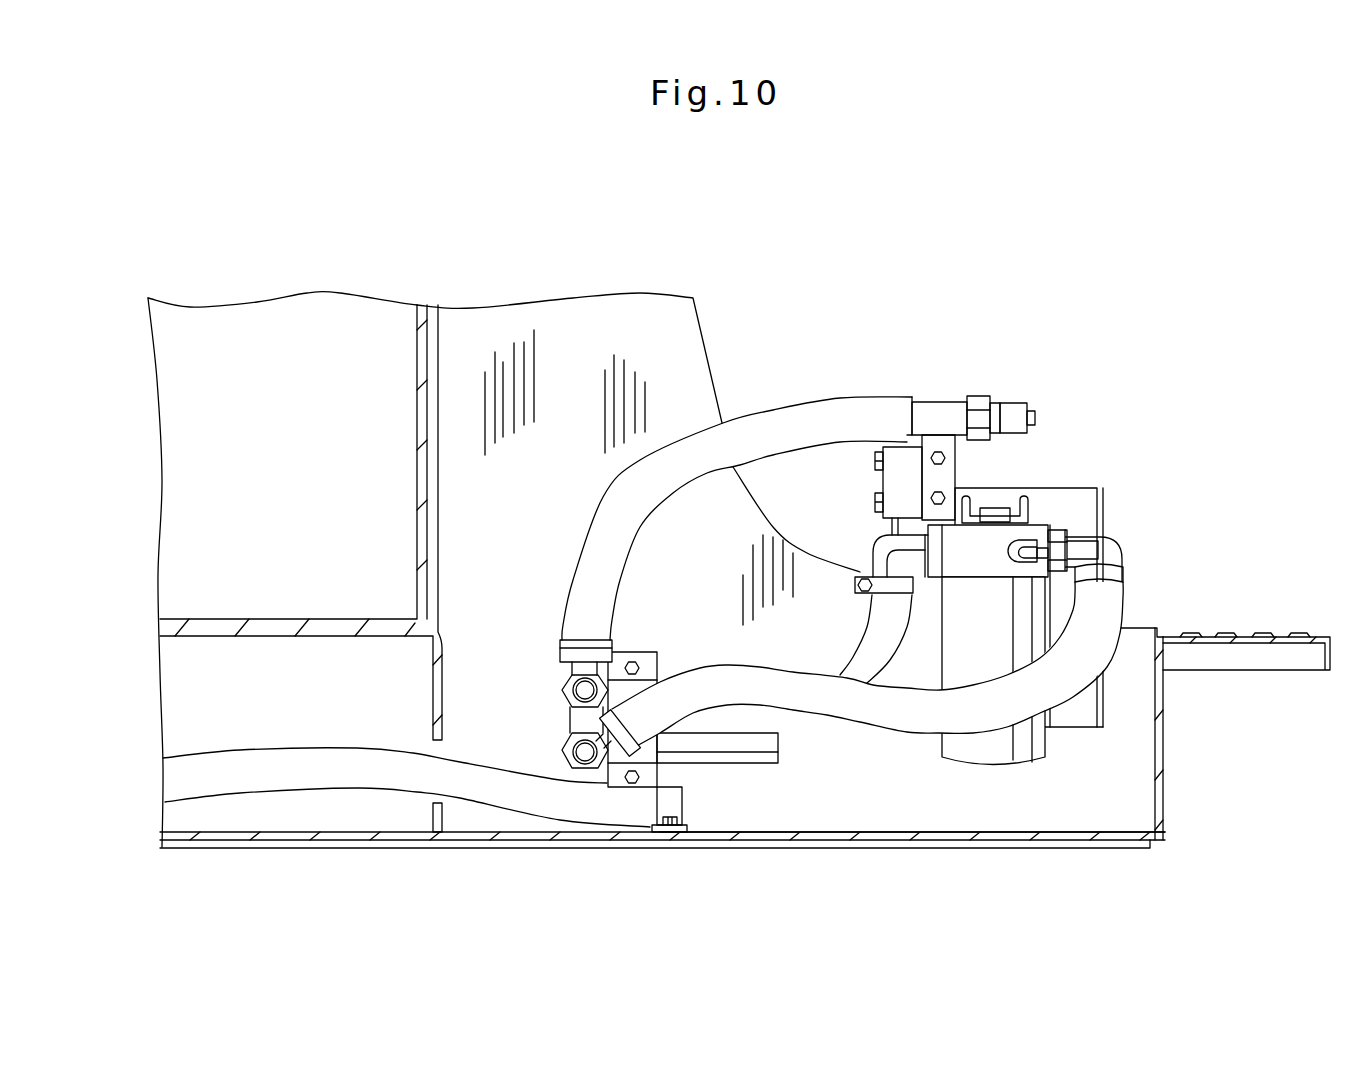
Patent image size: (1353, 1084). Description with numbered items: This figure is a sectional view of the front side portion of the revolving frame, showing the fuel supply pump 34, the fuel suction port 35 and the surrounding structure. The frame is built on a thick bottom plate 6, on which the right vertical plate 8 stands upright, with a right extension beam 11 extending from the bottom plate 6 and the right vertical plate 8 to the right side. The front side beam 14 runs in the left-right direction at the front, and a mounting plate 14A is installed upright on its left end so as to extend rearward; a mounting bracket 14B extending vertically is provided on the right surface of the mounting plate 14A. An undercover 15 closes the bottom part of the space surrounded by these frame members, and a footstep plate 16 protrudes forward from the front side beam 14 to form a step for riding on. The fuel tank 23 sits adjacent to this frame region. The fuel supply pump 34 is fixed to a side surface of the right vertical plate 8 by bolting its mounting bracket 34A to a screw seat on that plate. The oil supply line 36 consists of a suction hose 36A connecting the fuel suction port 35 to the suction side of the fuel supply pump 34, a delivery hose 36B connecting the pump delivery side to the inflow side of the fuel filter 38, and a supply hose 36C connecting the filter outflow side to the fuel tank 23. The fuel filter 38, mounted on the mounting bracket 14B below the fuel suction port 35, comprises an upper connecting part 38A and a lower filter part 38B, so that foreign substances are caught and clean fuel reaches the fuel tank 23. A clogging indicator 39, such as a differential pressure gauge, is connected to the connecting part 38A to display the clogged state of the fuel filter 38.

The bottom plate 6 is at (715, 845).
The right vertical plate 8 is at (568, 333).
The right extension beam 11 is at (203, 633).
The front side beam 14 is at (1160, 800).
The mounting plate 14A is at (1135, 643).
The mounting bracket 14B is at (1062, 507).
The undercover 15 is at (1028, 835).
The footstep plate 16 is at (1235, 660).
The fuel tank 23 is at (287, 347).
The fuel supply pump 34 is at (752, 727).
The mounting bracket 34A is at (648, 653).
The fuel suction port 35 is at (1018, 417).
The oil supply line 36 is at (877, 413).
The suction hose 36A is at (792, 420).
The delivery hose 36B is at (905, 712).
The supply hose 36C is at (535, 795).
The fuel filter 38 is at (983, 662).
The connecting part 38A is at (980, 557).
The filter part 38B is at (1007, 740).
The clogging indicator 39 is at (1080, 552).